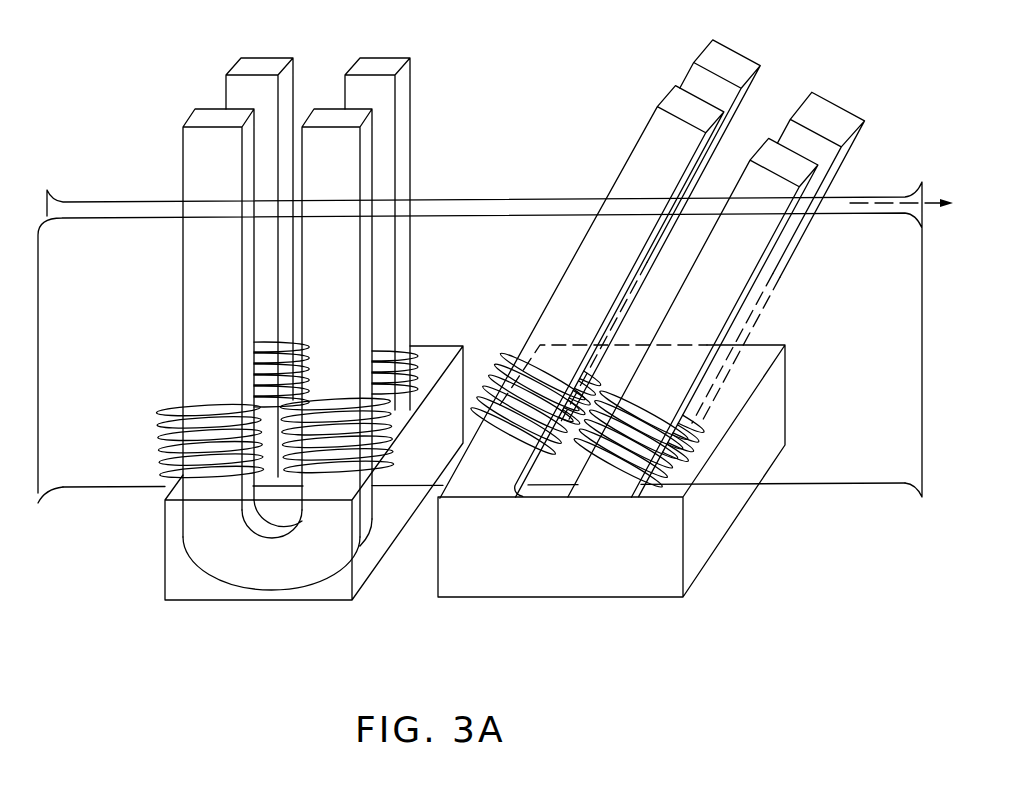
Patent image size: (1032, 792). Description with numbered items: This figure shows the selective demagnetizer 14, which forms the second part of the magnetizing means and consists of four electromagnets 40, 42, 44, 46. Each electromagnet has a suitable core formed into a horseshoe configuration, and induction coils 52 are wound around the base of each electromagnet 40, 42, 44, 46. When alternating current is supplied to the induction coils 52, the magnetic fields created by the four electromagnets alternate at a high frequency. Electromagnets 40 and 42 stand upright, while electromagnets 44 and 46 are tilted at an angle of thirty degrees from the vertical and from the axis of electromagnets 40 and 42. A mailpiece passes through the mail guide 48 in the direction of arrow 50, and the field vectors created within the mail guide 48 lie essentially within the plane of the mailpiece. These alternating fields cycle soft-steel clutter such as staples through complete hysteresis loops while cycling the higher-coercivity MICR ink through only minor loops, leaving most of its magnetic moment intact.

The selective demagnetizer 14 is at (517, 68).
The electromagnet 40 is at (372, 194).
The electromagnet 42 is at (410, 60).
The electromagnet 44 is at (613, 188).
The electromagnet 46 is at (705, 55).
The mail guide 48 is at (848, 194).
The arrow 50 is at (936, 203).
The induction coils 52 is at (730, 450).